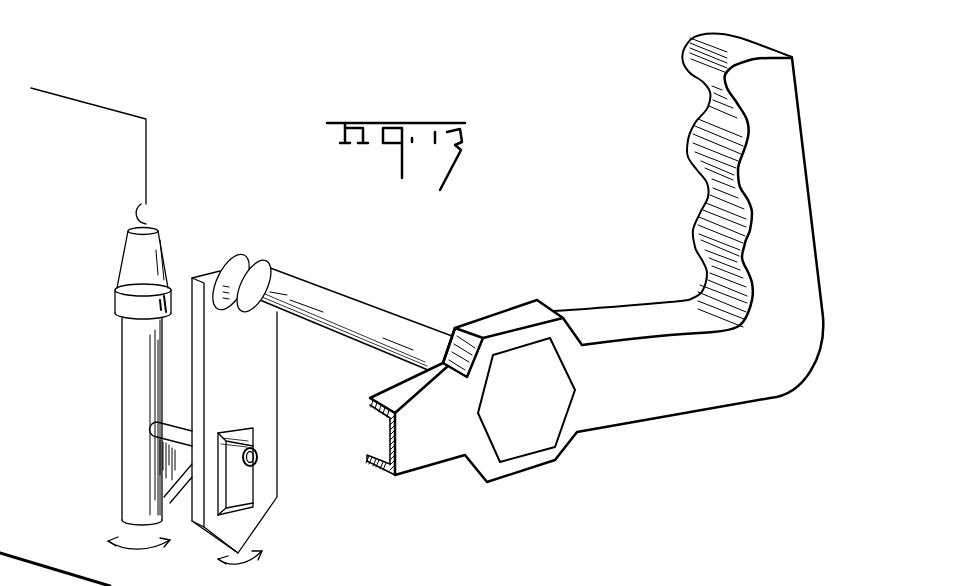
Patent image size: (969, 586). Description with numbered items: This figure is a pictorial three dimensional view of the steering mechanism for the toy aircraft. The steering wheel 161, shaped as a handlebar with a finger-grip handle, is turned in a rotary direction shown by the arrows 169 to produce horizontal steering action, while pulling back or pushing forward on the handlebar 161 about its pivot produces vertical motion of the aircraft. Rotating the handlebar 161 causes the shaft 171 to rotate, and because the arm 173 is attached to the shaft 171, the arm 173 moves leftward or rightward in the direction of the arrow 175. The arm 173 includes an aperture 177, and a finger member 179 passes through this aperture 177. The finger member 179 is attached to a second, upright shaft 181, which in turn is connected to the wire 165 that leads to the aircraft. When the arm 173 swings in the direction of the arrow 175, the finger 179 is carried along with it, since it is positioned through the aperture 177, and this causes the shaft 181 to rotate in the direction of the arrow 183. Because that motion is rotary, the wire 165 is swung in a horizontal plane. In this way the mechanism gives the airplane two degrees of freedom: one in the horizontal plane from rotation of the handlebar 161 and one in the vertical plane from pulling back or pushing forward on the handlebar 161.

The steering wheel 161 is at (660, 415).
The wire 165 is at (88, 103).
The arrows 169 is at (365, 320).
The shaft 171 is at (317, 288).
The arm 173 is at (272, 497).
The arrow 175 is at (258, 553).
The aperture 177 is at (233, 492).
The finger member 179 is at (253, 450).
The shaft 181 is at (123, 418).
The arrow 183 is at (138, 544).